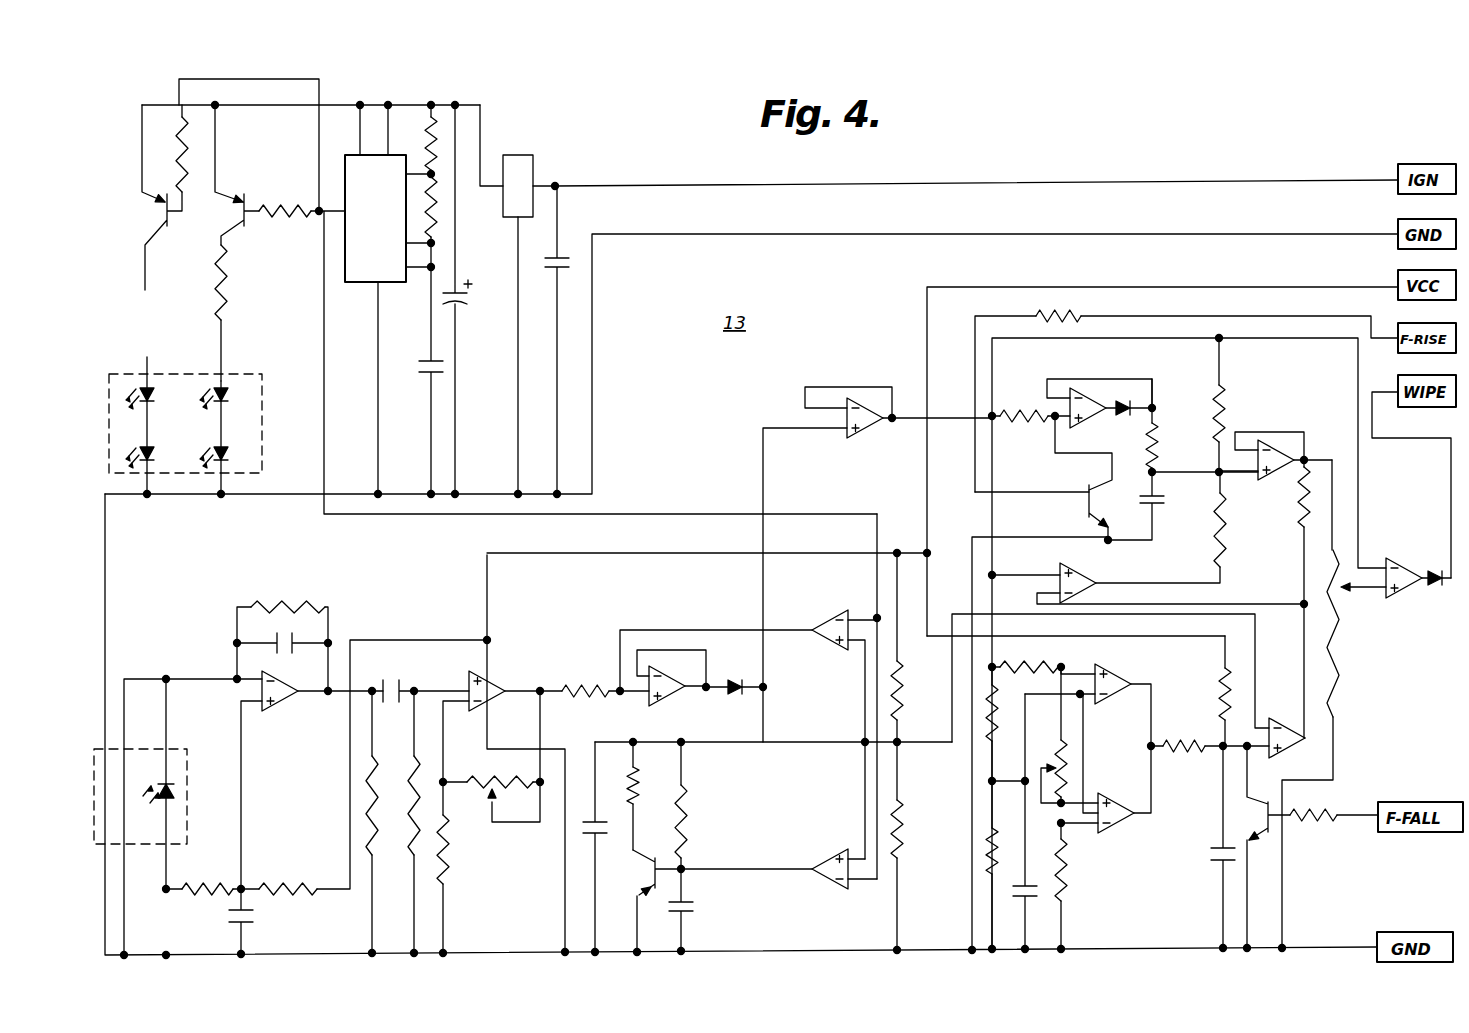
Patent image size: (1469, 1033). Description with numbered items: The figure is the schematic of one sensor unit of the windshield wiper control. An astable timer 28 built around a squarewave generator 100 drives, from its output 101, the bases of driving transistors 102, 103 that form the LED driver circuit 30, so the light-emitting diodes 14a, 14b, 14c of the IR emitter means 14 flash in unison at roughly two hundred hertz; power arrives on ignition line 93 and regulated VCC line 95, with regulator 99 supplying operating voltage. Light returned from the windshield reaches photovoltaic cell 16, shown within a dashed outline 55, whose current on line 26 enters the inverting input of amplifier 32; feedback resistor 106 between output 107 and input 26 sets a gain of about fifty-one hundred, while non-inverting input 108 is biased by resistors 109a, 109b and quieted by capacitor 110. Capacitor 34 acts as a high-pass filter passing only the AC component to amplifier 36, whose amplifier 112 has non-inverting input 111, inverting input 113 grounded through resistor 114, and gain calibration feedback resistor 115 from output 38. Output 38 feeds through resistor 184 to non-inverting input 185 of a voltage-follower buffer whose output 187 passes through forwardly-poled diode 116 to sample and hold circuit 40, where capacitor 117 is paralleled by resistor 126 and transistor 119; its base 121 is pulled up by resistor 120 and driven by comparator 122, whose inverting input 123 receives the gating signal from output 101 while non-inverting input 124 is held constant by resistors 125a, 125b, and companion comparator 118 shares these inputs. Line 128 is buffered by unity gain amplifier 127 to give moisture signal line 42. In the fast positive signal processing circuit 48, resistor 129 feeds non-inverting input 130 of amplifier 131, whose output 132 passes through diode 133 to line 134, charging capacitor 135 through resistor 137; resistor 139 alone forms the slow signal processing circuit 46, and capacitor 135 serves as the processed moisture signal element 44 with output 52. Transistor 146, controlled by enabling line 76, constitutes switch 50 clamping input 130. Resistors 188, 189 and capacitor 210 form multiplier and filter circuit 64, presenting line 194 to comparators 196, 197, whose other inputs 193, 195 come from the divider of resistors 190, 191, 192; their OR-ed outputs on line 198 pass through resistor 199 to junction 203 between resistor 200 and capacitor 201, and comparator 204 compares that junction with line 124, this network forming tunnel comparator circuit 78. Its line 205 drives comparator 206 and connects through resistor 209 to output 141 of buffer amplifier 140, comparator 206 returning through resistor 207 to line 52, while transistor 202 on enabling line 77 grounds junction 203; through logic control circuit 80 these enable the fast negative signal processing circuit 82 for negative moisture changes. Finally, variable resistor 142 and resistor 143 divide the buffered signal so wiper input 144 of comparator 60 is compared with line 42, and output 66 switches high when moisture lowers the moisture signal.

The IR emitter means 14 is at (250, 330).
The light-emitting diode 14a is at (144, 382).
The light-emitting diode 14b is at (233, 388).
The light-emitting diode 14c is at (234, 448).
The photovoltaic cell 16 is at (171, 752).
The output line 26 is at (188, 678).
The astable timer 28 is at (555, 133).
The LED driver circuit 30 is at (178, 102).
The amplifier 32 is at (277, 714).
The high-pass filter 34 is at (410, 800).
The amplifier 36 is at (502, 666).
The output 38 is at (541, 688).
The sample and hold circuit 40 is at (767, 789).
The moisture signal output line 42 is at (990, 493).
The processed moisture signal element 44 is at (1185, 481).
The slow signal processing circuit 46 is at (1248, 366).
The fast positive signal processing circuit 48 is at (1188, 642).
The on/off switch 50 is at (1040, 725).
The processed moisture signal line 52 is at (1210, 468).
The photodetector 55 is at (140, 796).
The moisture detecting comparator 60 is at (1406, 572).
The multiplier and filter circuit 64 is at (1010, 757).
The output line 66 is at (1451, 480).
The fast positive signal processing enabling line 76 is at (1148, 316).
The fast negative signal processing enabling line 77 is at (1376, 810).
The tunnel comparator circuit 78 is at (1130, 850).
The logic control circuit 80 is at (1384, 722).
The fast negative signal processing circuit 82 is at (1137, 557).
The processed ignition voltage line 93 is at (1076, 180).
The VCC line 95 is at (1027, 286).
The voltage regulator 99 is at (519, 155).
The squarewave generator 100 is at (349, 284).
The output 101 is at (326, 205).
The driving transistor 102 is at (166, 232).
The driving transistor 103 is at (235, 192).
The feedback resistor 106 is at (315, 605).
The output 107 is at (372, 686).
The non-inverting input 108 is at (243, 786).
The resistor 109a is at (201, 880).
The resistor 109b is at (293, 880).
The capacitor 110 is at (253, 915).
The non-inverting input 111 is at (456, 690).
The amplifier 112 is at (680, 692).
The inverting input 113 is at (447, 718).
The resistor 114 is at (452, 845).
The gain calibration feedback resistor 115 is at (492, 756).
The forwardly-poled diode 116 is at (740, 695).
The capacitor 117 is at (608, 832).
The companion comparator 118 is at (836, 614).
The transistor 119 is at (660, 903).
The resistor 120 is at (685, 808).
The base 121 is at (688, 865).
The comparator 122 is at (812, 890).
The inverting input 123 is at (880, 537).
The non-inverting input 124 is at (928, 746).
The resistor 125a is at (901, 682).
The resistor 125b is at (901, 832).
The resistor 126 is at (640, 776).
The unity gain amplifier 127 is at (880, 434).
The line 128 is at (760, 500).
The resistor 129 is at (1025, 410).
The non-inverting input 130 is at (1052, 420).
The amplifier 131 is at (1096, 390).
The output 132 is at (1104, 378).
The forwardly-poled diode 133 is at (1124, 400).
The line 134 is at (391, 704).
The capacitor 135 is at (1158, 506).
The resistor 137 is at (1160, 434).
The resistor 139 is at (1238, 413).
The buffer amplifier 140 is at (1273, 477).
The output 141 is at (1306, 448).
The variable resistor 142 is at (1334, 530).
The resistor 143 is at (1346, 669).
The non-inverting input 144 is at (1387, 592).
The transistor 146 is at (1095, 482).
The resistor 184 is at (587, 688).
The non-inverting input 185 is at (672, 626).
The output 187 is at (706, 676).
The resistor 188 is at (1000, 712).
The resistor 189 is at (986, 846).
The resistor 190 is at (1036, 660).
The resistor 191 is at (1090, 746).
The resistor 192 is at (1072, 876).
The non-inverting input 193 is at (1086, 642).
The line 194 is at (1055, 753).
The inverting input 195 is at (1083, 836).
The comparator 196 is at (1130, 676).
The comparator 197 is at (1111, 798).
The line 198 is at (1153, 708).
The resistor 199 is at (1186, 753).
The resistor 200 is at (1230, 681).
The capacitor 201 is at (1212, 852).
The transistor 202 is at (1260, 840).
The junction 203 is at (1240, 752).
The comparator 204 is at (1286, 727).
The line 205 is at (1307, 742).
The comparator 206 is at (1082, 572).
The resistor 207 is at (1232, 556).
The resistor 209 is at (1298, 533).
The capacitor 210 is at (1038, 890).